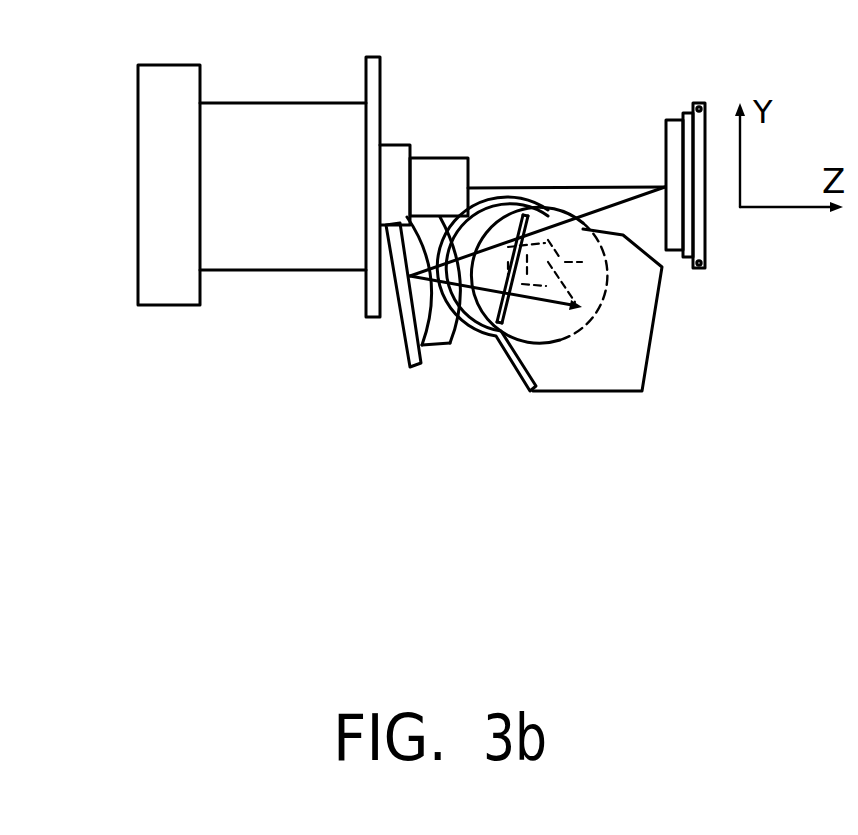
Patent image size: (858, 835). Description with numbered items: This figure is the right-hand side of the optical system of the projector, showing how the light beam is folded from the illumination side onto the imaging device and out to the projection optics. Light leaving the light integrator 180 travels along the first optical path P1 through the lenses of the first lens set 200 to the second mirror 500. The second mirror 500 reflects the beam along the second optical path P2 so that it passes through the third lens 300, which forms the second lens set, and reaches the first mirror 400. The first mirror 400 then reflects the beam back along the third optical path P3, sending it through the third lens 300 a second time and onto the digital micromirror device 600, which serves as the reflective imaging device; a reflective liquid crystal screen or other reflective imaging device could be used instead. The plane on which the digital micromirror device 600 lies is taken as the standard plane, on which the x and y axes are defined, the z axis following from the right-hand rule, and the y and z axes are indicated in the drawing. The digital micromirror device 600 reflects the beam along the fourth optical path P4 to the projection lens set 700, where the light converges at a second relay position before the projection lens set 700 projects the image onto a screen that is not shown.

The projection lens set 700 is at (290, 103).
The digital micromirror device 600 is at (697, 102).
The first mirror 400 is at (405, 323).
The third lens 300 is at (407, 358).
The first lens set 200 is at (476, 329).
The light integrator 180 is at (600, 270).
The second mirror 500 is at (635, 345).
The first optical path P1 is at (562, 318).
The second optical path P2 is at (519, 380).
The third optical path P3 is at (611, 208).
The fourth optical path P4 is at (522, 185).